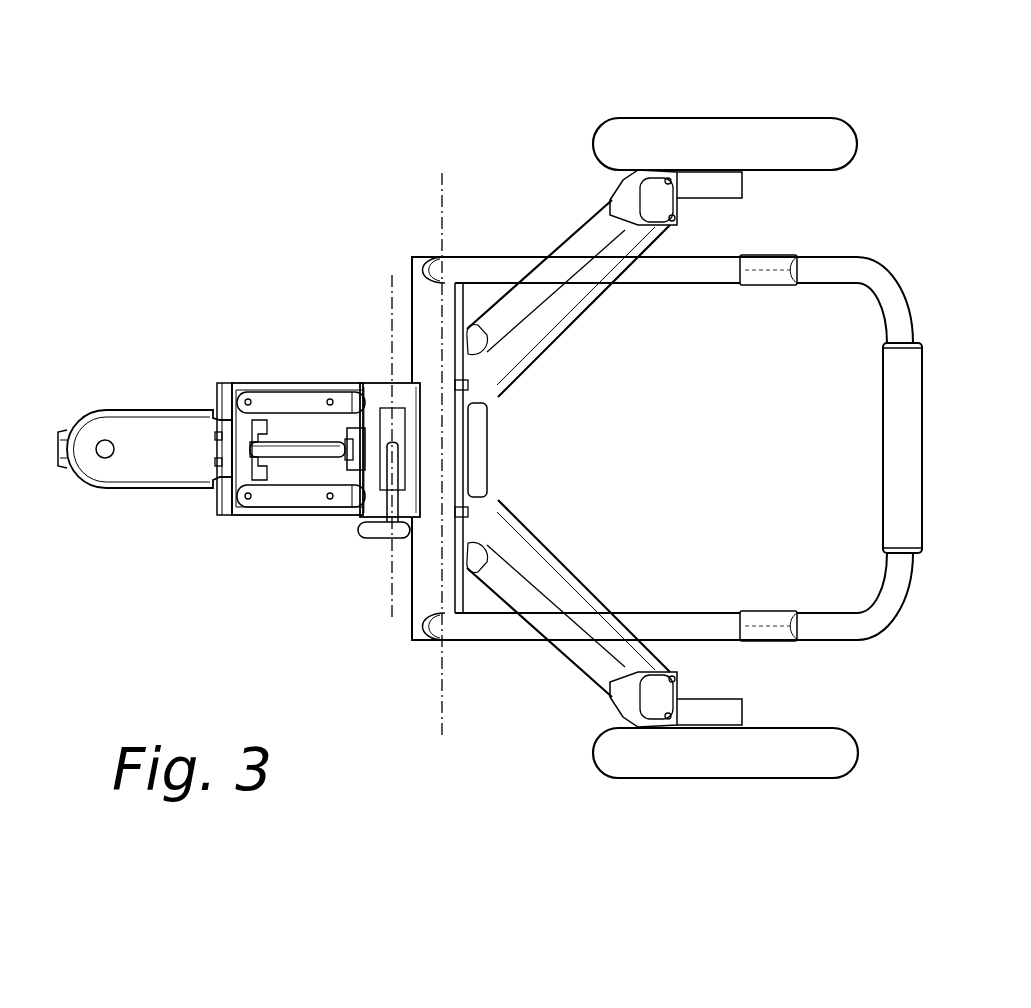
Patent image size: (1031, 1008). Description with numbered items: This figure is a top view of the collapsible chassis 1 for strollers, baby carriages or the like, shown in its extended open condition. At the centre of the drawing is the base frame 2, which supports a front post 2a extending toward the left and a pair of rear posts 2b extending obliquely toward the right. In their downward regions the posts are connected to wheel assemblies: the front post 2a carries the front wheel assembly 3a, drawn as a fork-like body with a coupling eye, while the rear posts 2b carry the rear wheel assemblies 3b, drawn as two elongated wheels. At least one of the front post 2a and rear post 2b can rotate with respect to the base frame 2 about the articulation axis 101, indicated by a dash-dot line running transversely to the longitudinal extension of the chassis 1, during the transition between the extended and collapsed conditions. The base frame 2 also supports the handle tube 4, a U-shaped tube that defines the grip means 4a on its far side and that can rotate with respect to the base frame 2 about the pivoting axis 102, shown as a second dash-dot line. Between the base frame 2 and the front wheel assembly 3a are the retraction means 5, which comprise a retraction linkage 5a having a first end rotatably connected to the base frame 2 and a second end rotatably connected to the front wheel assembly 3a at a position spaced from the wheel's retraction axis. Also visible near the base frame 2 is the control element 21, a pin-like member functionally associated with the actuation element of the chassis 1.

The collapsible chassis 1 is at (228, 224).
The base frame 2 is at (372, 498).
The front post 2a is at (271, 395).
The rear post 2b is at (520, 305).
The front wheel assembly 3a is at (145, 437).
The rear wheel assembly 3b is at (740, 140).
The handle tube 4 is at (517, 272).
The grip means 4a is at (905, 466).
The retraction means 5 is at (310, 420).
The retraction linkage 5a is at (285, 457).
The control element 21 is at (375, 540).
The articulation axis 101 is at (390, 286).
The pivoting axis 102 is at (440, 192).